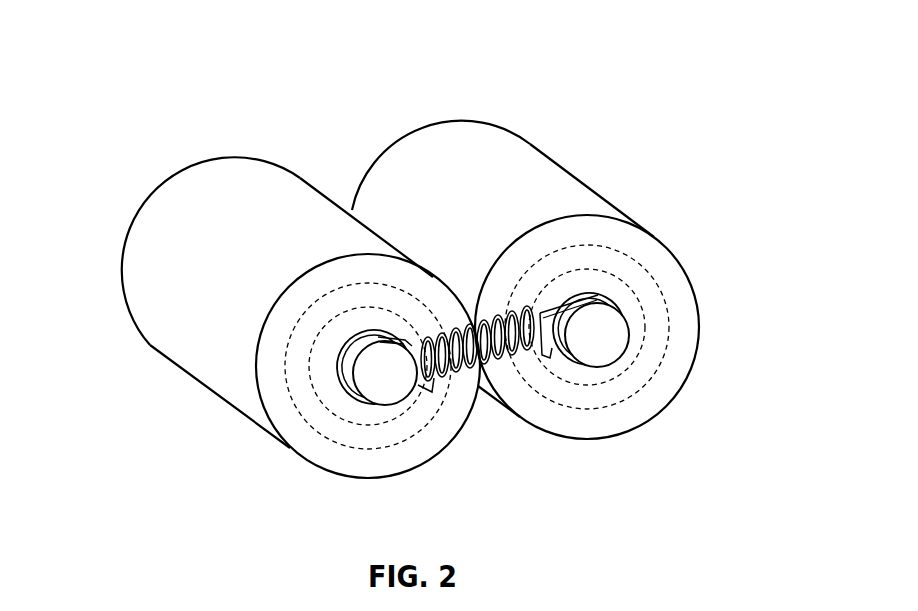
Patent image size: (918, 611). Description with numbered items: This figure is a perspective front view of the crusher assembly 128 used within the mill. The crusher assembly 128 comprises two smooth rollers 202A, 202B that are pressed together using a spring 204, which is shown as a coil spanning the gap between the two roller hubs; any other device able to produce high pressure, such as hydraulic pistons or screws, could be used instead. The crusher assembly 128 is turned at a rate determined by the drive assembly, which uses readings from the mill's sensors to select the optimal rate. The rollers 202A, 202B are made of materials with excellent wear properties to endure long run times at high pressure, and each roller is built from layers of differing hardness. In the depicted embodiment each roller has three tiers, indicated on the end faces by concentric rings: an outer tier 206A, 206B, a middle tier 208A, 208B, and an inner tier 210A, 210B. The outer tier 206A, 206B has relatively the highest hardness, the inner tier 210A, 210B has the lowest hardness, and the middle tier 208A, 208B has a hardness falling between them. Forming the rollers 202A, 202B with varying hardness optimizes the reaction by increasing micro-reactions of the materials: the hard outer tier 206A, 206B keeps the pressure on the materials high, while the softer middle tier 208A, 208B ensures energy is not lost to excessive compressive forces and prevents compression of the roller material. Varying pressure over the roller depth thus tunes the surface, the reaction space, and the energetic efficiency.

The crusher assembly 128 is at (181, 102).
The roller 202A is at (128, 290).
The roller 202B is at (653, 238).
The spring 204 is at (463, 388).
The outer tier 206A is at (418, 452).
The outer tier 206B is at (673, 298).
The middle tier 208A is at (383, 437).
The middle tier 208B is at (653, 353).
The inner tier 210A is at (318, 380).
The inner tier 210B is at (598, 378).